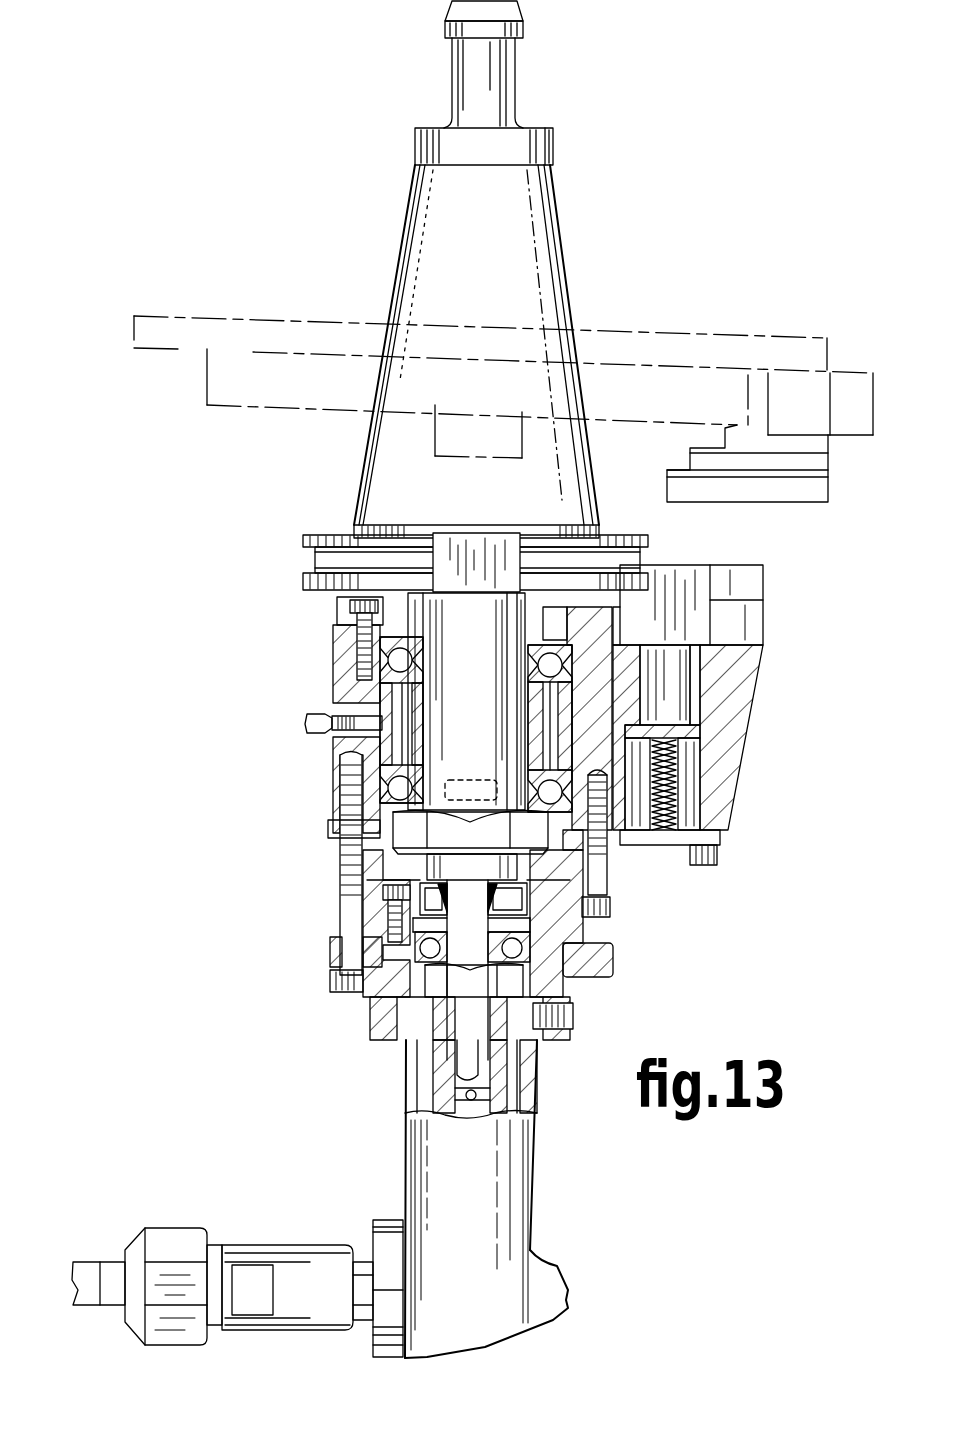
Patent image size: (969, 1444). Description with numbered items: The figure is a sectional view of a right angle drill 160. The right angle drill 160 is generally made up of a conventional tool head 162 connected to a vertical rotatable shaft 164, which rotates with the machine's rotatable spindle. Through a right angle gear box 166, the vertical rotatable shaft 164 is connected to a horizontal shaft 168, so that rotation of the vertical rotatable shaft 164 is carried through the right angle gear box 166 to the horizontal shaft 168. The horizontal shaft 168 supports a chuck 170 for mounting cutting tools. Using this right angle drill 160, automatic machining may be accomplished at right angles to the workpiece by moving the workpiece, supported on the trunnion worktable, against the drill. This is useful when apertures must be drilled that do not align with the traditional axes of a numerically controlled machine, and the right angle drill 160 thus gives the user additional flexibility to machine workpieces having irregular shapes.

The right angle drill 160 is at (168, 603).
The tool head 162 is at (365, 470).
The vertical rotatable shaft 164 is at (379, 768).
The right angle gear box 166 is at (522, 1215).
The horizontal shaft 168 is at (365, 1262).
The chuck 170 is at (281, 1248).